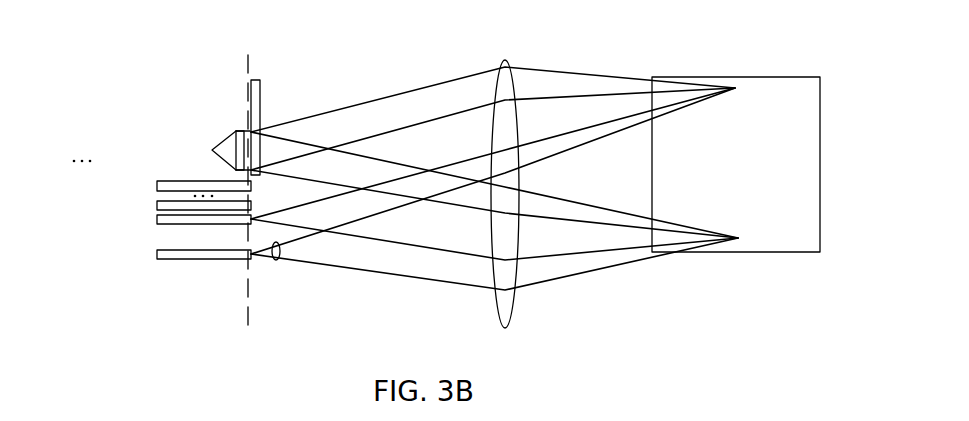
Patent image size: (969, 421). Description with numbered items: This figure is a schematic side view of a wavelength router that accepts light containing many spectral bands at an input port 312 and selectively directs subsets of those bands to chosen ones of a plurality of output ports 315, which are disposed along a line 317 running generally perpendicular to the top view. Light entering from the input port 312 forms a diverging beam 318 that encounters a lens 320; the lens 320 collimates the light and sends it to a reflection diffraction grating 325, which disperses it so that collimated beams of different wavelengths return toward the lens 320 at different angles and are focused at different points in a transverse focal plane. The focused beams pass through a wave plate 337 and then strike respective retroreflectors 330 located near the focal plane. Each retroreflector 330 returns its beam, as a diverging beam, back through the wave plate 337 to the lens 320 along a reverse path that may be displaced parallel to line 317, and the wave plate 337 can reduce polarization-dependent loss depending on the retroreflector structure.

The input port 312 is at (170, 260).
The output ports 315 is at (157, 182).
The line 317 is at (250, 290).
The diverging beam 318 is at (279, 262).
The lens 320 is at (517, 310).
The reflection diffraction grating 325 is at (773, 77).
The retroreflectors 330 is at (238, 134).
The wave plate 337 is at (262, 98).